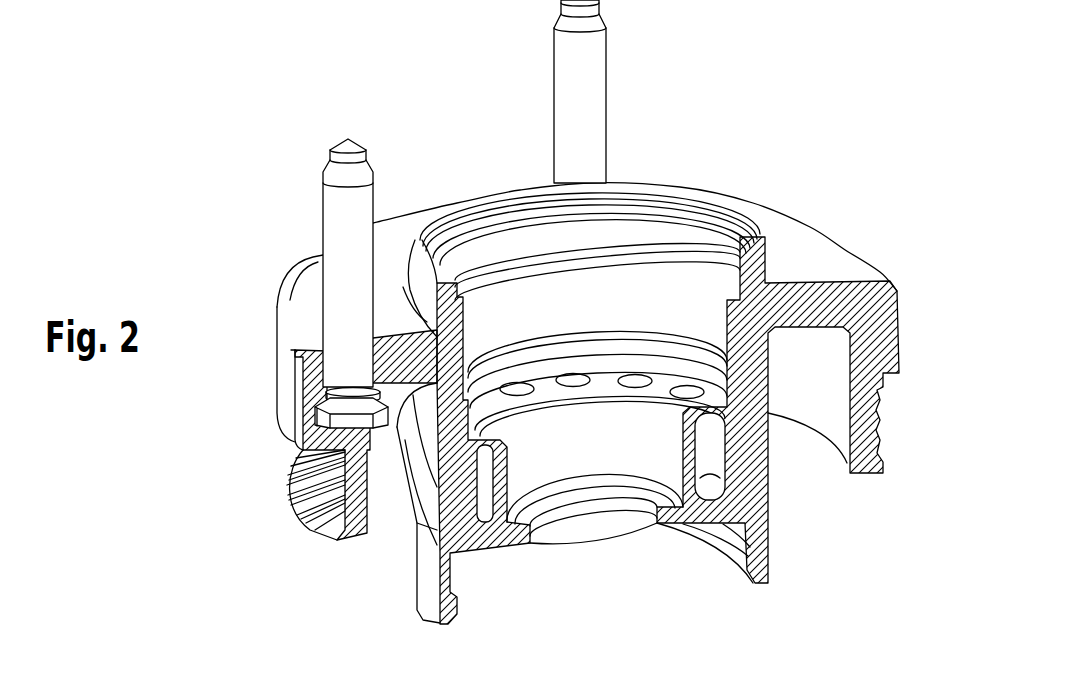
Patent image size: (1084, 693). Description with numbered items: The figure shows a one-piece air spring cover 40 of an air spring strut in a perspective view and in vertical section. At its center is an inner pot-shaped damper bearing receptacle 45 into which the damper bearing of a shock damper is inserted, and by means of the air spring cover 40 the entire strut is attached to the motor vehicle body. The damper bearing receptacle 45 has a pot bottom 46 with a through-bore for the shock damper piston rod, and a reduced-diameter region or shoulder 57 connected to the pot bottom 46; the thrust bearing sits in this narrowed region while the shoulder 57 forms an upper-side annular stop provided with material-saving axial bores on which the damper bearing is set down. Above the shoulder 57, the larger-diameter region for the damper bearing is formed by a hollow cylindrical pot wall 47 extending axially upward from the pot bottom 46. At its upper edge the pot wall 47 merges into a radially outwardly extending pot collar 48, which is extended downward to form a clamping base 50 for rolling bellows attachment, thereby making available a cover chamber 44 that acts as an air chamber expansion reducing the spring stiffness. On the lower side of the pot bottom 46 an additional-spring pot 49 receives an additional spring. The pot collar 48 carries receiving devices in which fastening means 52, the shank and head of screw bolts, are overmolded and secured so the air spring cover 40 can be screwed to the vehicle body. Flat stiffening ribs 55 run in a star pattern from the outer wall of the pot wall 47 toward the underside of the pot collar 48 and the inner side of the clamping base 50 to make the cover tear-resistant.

The air spring cover 40 is at (772, 130).
The cover chamber 44 is at (820, 399).
The damper bearing receptacle 45 is at (472, 344).
The pot bottom 46 is at (671, 513).
The pot wall 47 is at (747, 453).
The pot collar 48 is at (828, 252).
The additional-spring pot 49 is at (762, 568).
The clamping base 50 is at (330, 490).
The fastening means 52 is at (585, 62).
The stiffening ribs 55 is at (407, 480).
The shoulder 57 is at (688, 442).